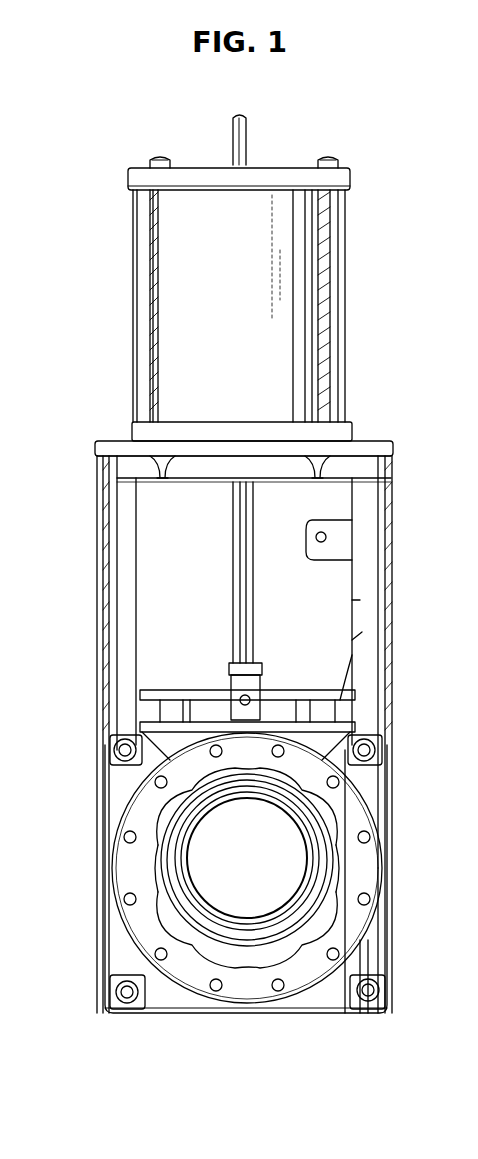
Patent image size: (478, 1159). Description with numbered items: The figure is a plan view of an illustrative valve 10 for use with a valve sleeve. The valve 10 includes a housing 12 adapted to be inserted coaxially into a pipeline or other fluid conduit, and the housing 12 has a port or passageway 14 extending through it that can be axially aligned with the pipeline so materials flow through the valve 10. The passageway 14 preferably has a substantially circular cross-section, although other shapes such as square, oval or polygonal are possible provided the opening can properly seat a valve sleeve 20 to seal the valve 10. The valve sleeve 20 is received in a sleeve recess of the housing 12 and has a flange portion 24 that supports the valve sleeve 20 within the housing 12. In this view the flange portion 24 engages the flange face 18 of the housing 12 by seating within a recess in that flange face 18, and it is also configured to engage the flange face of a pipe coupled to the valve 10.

The valve 10 is at (399, 566).
The housing 12 is at (164, 992).
The passageway 14 is at (247, 858).
The flange face 18 is at (140, 860).
The valve sleeve 20 is at (340, 867).
The flange portion 24 is at (338, 853).